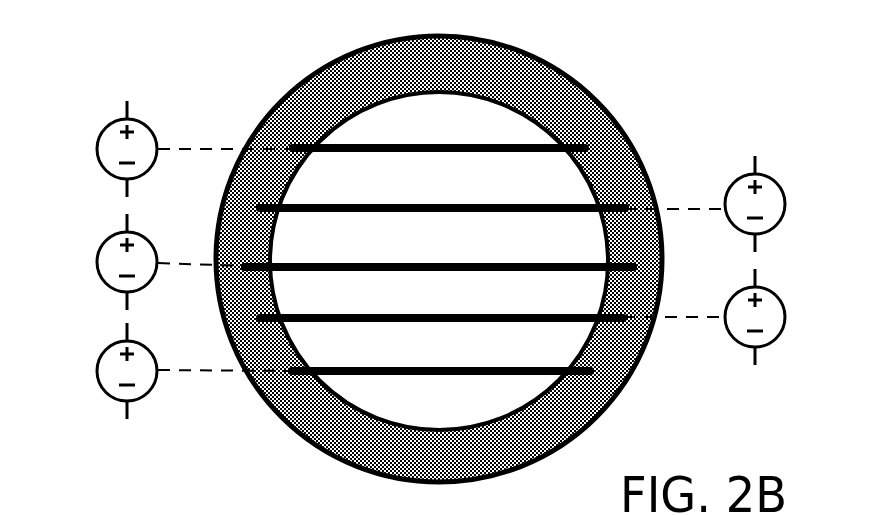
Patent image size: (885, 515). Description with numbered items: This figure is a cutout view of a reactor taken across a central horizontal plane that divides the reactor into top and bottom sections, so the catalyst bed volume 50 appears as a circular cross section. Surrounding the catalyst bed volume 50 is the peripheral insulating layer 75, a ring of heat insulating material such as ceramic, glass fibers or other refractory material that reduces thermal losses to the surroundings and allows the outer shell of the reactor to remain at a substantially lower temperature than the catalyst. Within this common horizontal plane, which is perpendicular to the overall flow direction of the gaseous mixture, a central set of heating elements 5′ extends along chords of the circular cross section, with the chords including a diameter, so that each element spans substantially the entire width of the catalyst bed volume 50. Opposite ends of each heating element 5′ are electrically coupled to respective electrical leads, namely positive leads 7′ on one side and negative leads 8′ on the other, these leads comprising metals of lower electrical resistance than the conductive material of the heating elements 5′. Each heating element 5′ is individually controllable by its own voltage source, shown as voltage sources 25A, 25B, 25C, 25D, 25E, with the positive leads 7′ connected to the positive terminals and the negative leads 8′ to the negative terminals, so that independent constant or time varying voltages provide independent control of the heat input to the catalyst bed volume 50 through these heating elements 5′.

The heating element 5′ is at (441, 144).
The positive lead 7′ is at (312, 152).
The negative lead 8′ is at (590, 212).
The catalyst bed volume 50 is at (539, 196).
The peripheral insulating layer 75 is at (456, 466).
The voltage source 25A is at (96, 149).
The voltage source 25B is at (786, 204).
The voltage source 25C is at (96, 262).
The voltage source 25D is at (786, 317).
The voltage source 25E is at (96, 371).